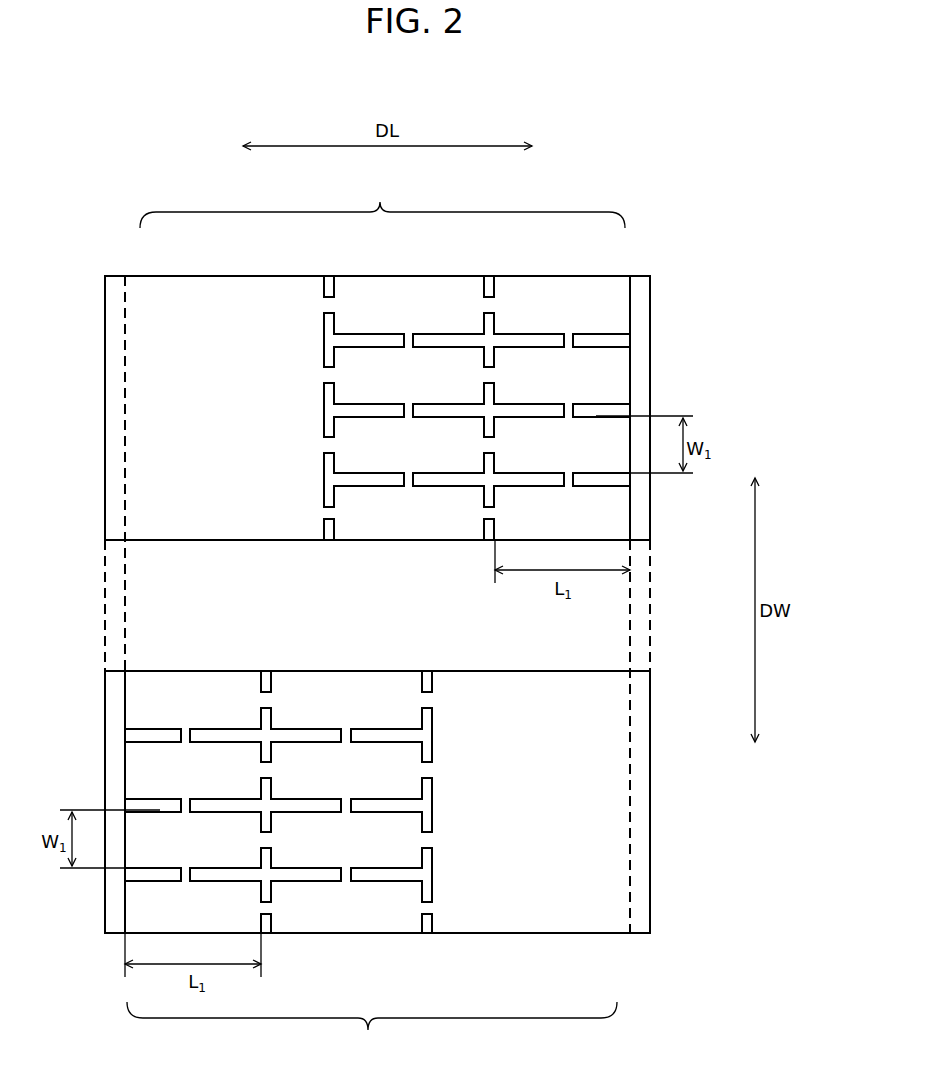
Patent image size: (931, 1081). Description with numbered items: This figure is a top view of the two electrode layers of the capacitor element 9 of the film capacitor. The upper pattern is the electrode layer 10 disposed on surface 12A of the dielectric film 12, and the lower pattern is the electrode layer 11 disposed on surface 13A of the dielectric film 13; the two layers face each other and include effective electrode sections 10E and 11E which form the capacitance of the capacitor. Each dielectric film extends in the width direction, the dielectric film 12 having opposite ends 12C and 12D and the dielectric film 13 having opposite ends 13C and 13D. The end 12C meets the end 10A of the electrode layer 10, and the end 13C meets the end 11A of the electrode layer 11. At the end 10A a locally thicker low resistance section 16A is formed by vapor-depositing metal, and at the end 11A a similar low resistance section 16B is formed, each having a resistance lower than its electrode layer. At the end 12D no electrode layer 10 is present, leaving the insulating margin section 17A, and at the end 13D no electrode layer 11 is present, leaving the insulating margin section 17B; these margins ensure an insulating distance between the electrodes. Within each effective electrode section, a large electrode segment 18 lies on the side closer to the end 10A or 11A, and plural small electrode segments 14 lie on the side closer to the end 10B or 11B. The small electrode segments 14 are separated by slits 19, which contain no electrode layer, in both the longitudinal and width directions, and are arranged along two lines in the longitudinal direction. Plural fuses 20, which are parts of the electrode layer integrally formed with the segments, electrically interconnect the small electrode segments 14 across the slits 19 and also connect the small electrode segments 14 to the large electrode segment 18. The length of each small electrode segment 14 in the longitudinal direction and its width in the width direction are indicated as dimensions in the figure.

The capacitor element 9 is at (688, 218).
The electrode layer 10 is at (225, 295).
The end of electrode layer 10A is at (105, 370).
The end of electrode layer 10B is at (630, 370).
The effective electrode section 10E is at (382, 204).
The electrode layer 11 is at (507, 687).
The end of electrode layer 11A is at (655, 760).
The end of electrode layer 11B is at (123, 763).
The effective electrode section 11E is at (372, 1030).
The dielectric film 12 is at (640, 312).
The surface of dielectric film 12A is at (637, 398).
The end of dielectric film 12C is at (105, 443).
The end of dielectric film 12D is at (652, 522).
The dielectric film 13 is at (110, 707).
The surface of dielectric film 13A is at (113, 790).
The end of dielectric film 13C is at (652, 837).
The end of dielectric film 13D is at (103, 918).
The small electrode segment 14 is at (388, 367).
The low resistance section 16A is at (115, 292).
The low resistance section 16B is at (637, 928).
The insulating margin section 17A is at (638, 295).
The insulating margin section 17B is at (117, 920).
The large electrode segment 18 is at (222, 520).
The slit 19 is at (457, 408).
The fuse 20 is at (333, 303).